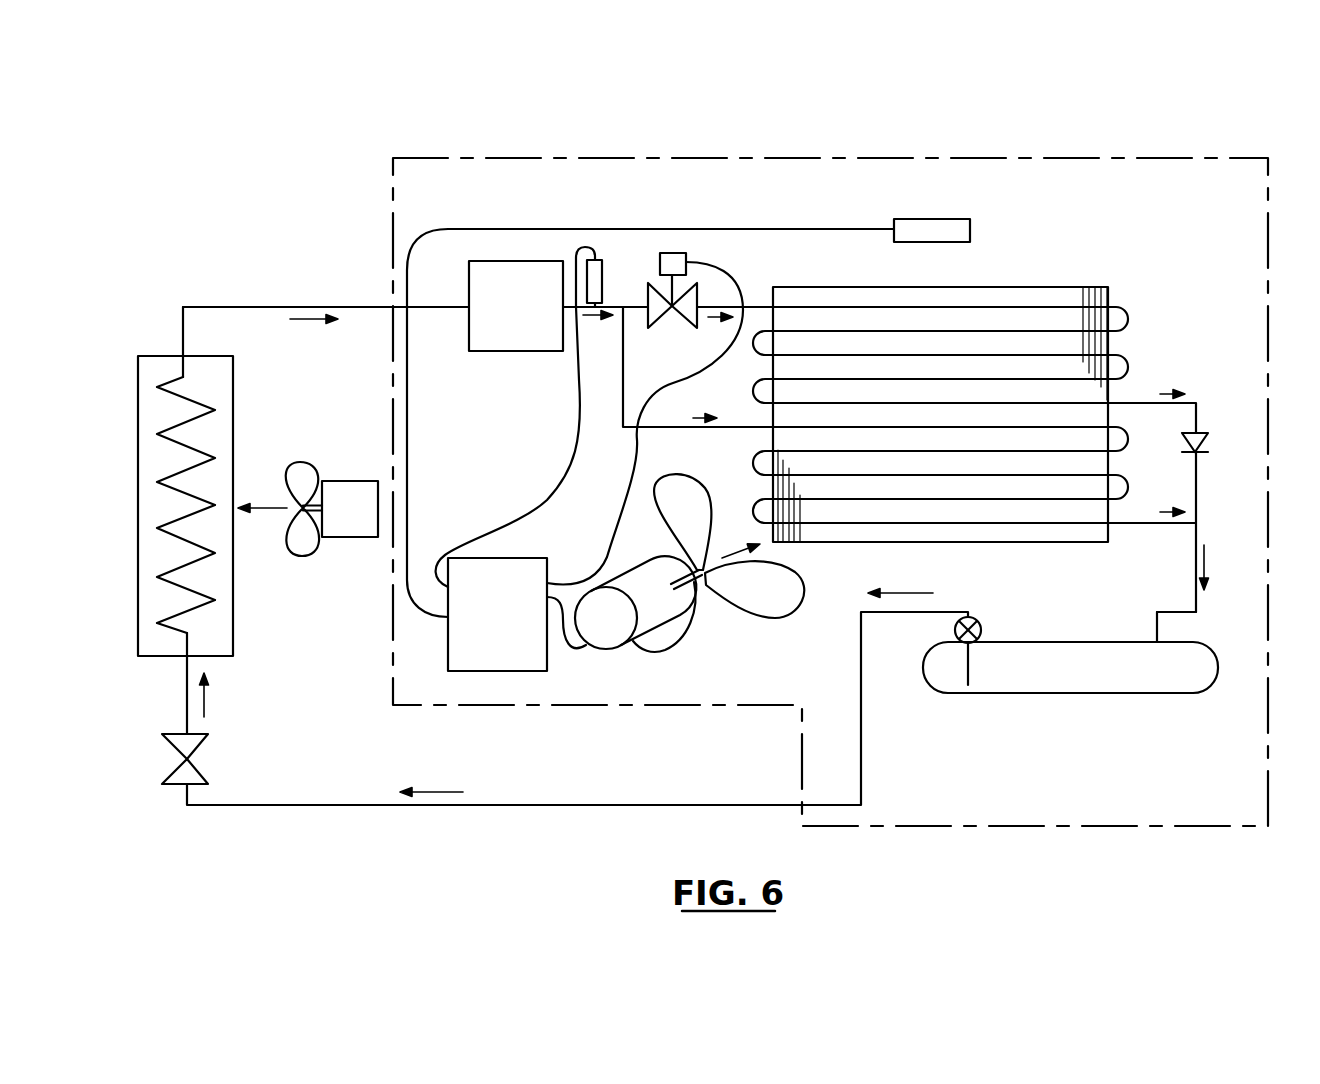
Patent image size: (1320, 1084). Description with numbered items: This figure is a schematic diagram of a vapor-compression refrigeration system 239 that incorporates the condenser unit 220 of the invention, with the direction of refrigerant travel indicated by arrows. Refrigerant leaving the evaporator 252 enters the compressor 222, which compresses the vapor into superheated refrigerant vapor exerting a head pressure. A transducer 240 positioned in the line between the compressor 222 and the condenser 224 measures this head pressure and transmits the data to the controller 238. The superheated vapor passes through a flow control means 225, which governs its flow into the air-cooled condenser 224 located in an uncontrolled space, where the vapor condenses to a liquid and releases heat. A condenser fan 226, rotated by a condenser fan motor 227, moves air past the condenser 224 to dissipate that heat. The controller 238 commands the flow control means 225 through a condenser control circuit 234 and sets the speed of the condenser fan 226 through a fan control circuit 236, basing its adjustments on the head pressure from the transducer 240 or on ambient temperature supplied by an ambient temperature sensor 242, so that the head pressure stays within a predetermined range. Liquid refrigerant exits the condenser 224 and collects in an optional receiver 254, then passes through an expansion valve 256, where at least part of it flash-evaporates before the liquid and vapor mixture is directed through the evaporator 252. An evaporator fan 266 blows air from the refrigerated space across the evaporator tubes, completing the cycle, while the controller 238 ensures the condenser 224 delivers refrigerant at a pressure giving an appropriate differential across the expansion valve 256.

The vapor-compression system 239 is at (293, 132).
The condenser unit 220 is at (1044, 149).
The ambient temperature sensor 242 is at (935, 221).
The transducer 240 is at (604, 282).
The condenser control circuit 234 is at (742, 280).
The condenser 224 is at (1142, 309).
The compressor 222 is at (498, 354).
The flow control means 225 is at (663, 317).
The evaporator 252 is at (222, 390).
The evaporator fan 266 is at (301, 466).
The expansion valve 256 is at (196, 768).
The controller 238 is at (477, 662).
The fan control circuit 236 is at (575, 655).
The condenser fan motor 227 is at (628, 647).
The condenser fan 226 is at (694, 633).
The receiver 254 is at (1100, 686).